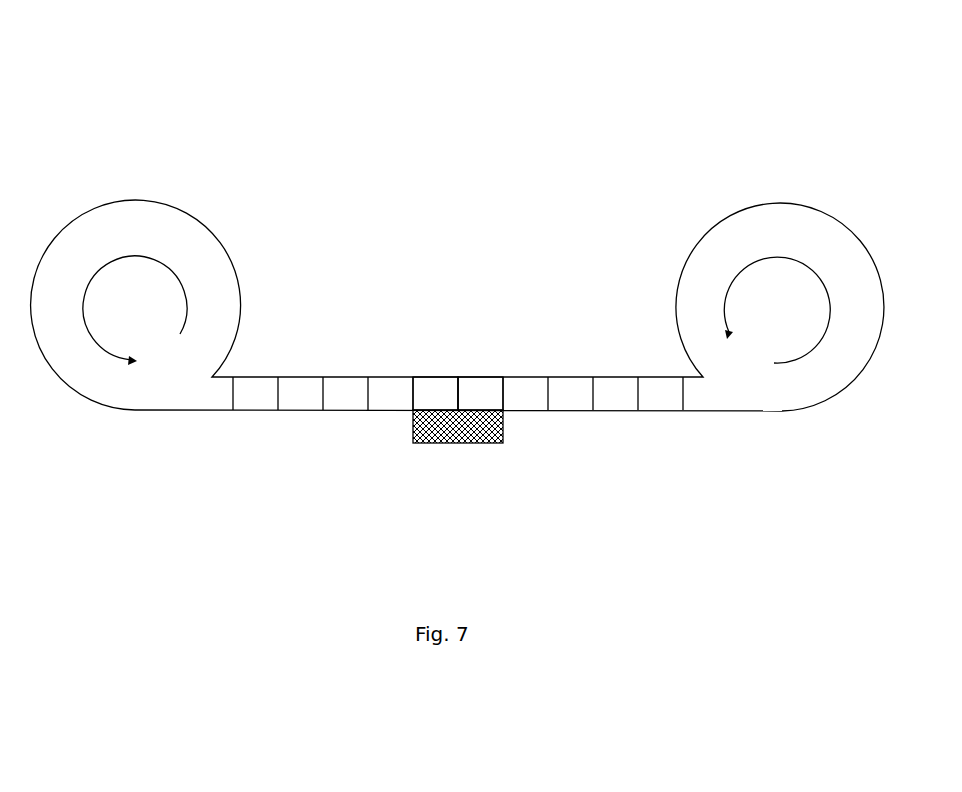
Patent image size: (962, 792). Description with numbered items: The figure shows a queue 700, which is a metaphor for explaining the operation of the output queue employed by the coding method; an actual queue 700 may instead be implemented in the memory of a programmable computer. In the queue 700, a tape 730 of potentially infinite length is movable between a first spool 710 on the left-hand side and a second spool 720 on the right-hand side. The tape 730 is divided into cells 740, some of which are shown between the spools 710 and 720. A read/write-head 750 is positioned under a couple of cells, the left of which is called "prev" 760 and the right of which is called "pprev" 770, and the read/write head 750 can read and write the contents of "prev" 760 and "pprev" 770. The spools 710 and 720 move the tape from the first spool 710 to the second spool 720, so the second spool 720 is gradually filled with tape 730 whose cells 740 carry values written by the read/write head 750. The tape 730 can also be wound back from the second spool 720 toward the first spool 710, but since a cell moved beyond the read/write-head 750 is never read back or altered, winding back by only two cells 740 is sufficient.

The queue 700 is at (186, 38).
The first spool 710 is at (183, 205).
The second spool 720 is at (755, 203).
The tape 730 is at (376, 356).
The cells 740 is at (258, 410).
The read/write-head 750 is at (457, 443).
The prev 760 is at (432, 377).
The pprev 770 is at (478, 377).